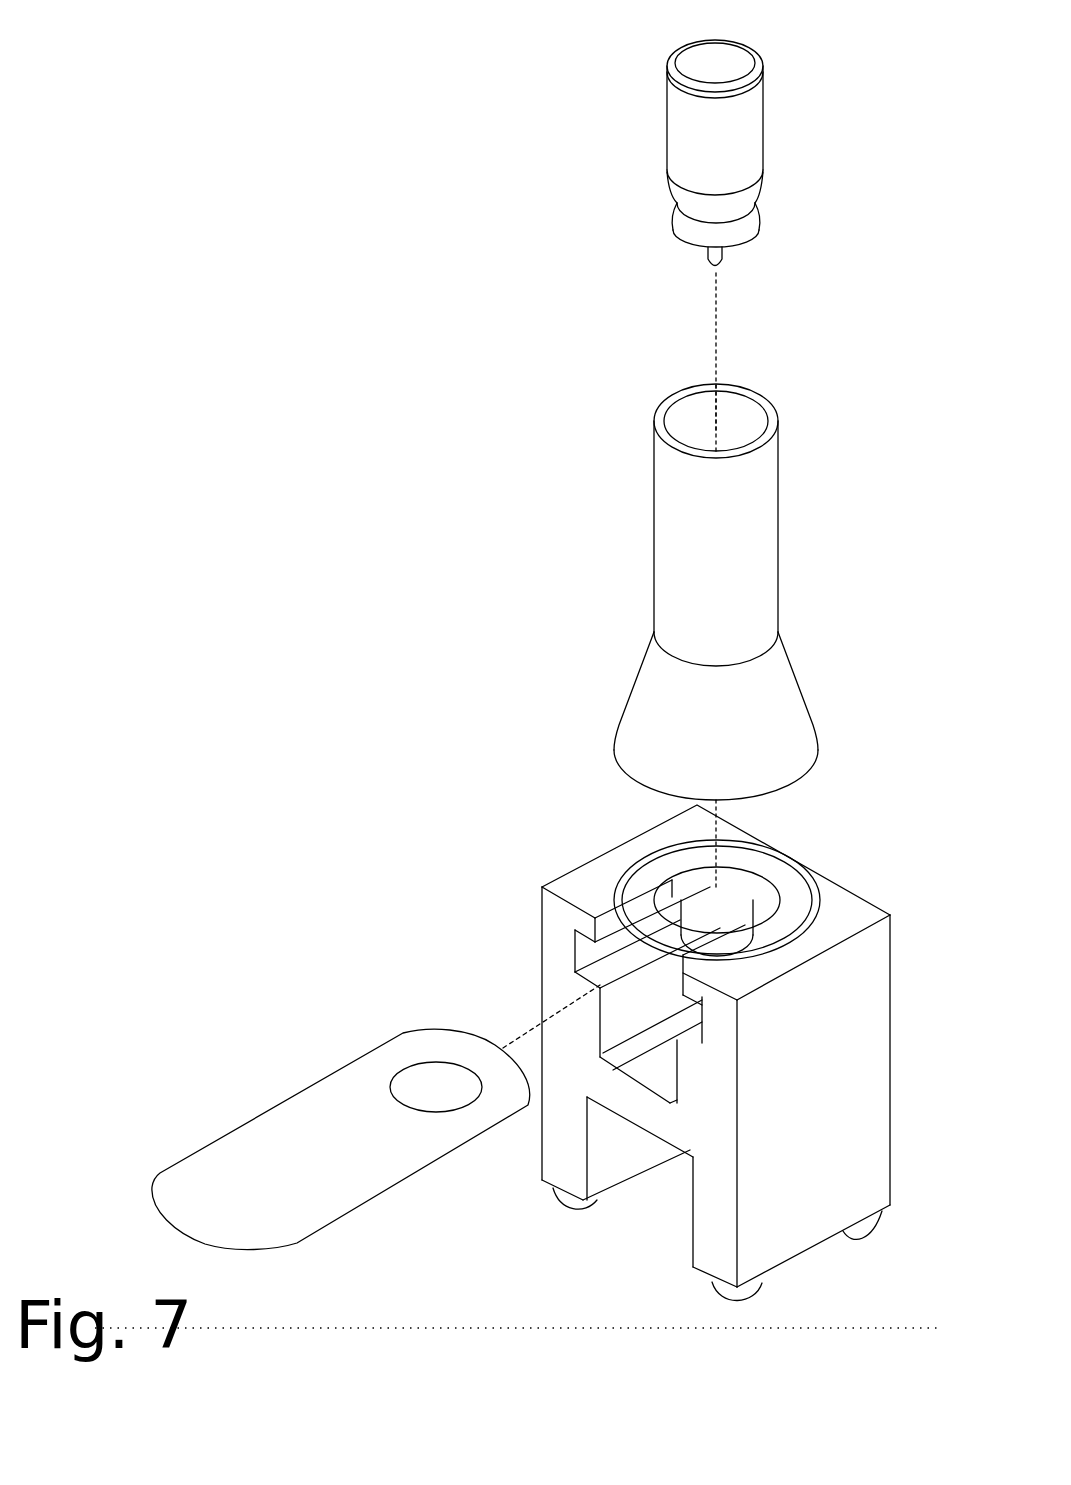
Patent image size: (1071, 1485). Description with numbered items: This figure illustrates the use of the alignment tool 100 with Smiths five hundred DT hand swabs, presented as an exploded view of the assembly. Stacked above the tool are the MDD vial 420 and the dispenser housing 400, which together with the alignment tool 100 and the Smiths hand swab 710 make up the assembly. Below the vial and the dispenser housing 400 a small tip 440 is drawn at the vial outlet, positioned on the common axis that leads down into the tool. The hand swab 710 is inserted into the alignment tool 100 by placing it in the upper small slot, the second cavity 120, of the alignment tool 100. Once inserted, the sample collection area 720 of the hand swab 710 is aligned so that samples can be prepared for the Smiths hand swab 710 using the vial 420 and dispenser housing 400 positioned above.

The alignment tool 100 is at (818, 1205).
The second cavity 120 is at (745, 889).
The dispenser housing 400 is at (803, 673).
The MDD vial 420 is at (752, 145).
The dispensing tip 440 is at (724, 256).
The Smiths 500DT hand swab 710 is at (287, 1223).
The sample collection area 720 is at (442, 1072).